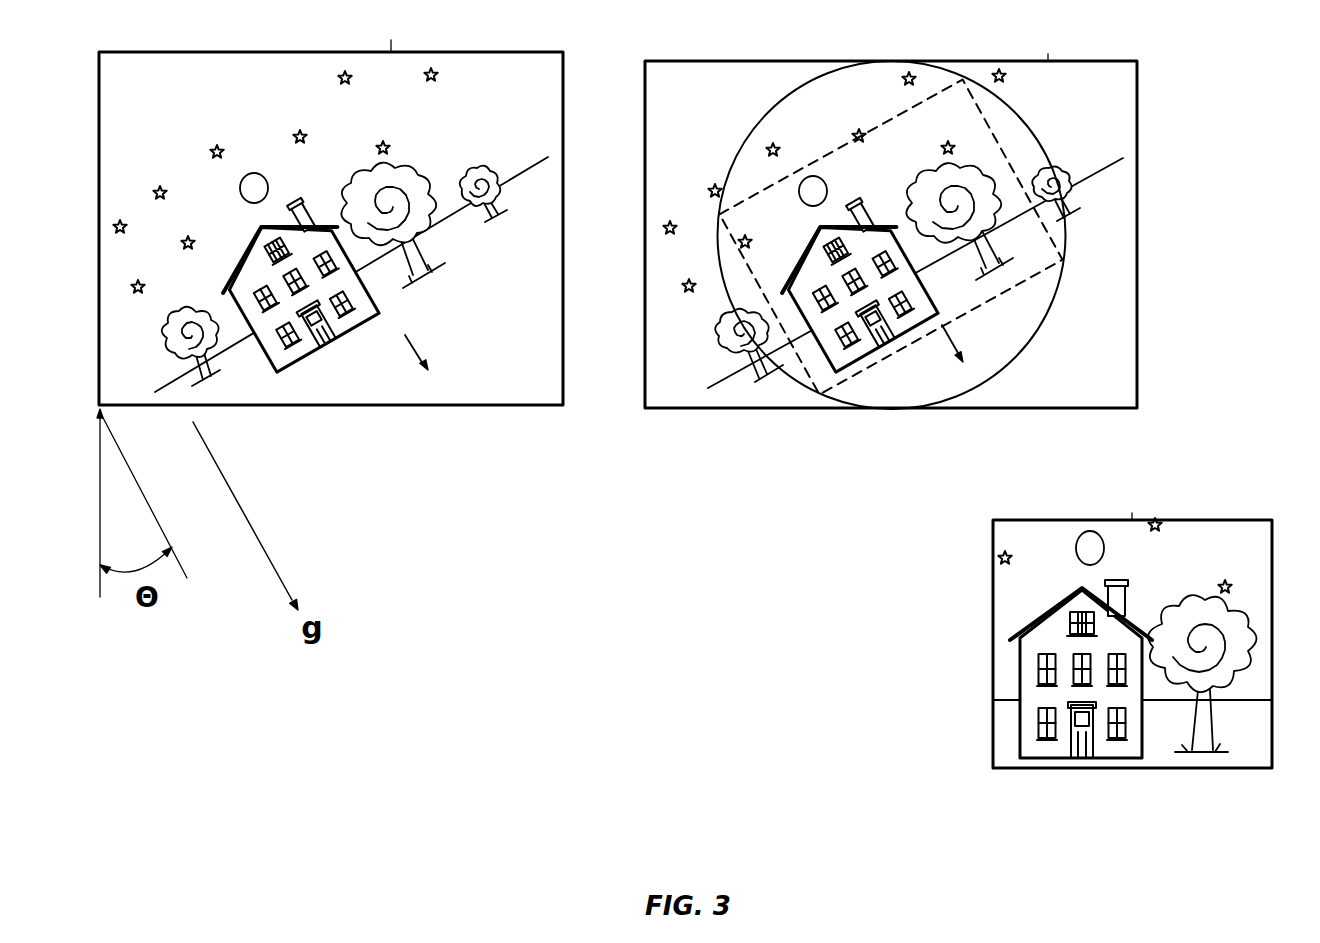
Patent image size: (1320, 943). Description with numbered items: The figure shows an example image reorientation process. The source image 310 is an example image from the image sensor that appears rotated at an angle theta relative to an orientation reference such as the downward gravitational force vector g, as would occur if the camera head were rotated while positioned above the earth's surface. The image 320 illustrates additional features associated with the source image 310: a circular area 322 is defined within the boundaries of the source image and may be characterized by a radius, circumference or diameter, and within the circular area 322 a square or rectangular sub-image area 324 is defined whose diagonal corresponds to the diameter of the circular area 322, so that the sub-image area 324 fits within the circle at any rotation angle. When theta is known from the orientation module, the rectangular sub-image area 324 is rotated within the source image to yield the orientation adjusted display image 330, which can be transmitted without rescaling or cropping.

The source image 310 is at (500, 406).
The image illustrating features of the source image 320 is at (712, 407).
The circular area 322 is at (1015, 353).
The sub-image area 324 is at (821, 160).
The orientation adjusted sub-image 330 is at (1017, 770).